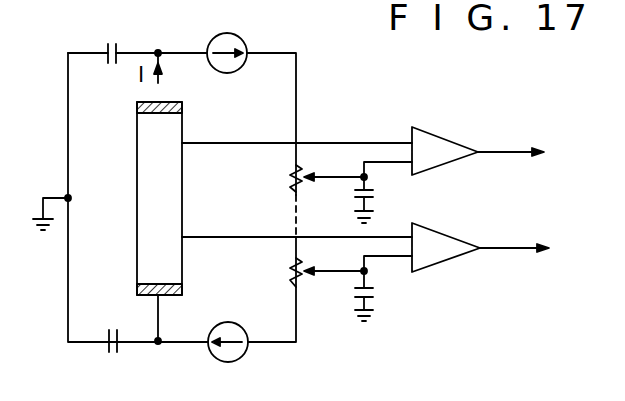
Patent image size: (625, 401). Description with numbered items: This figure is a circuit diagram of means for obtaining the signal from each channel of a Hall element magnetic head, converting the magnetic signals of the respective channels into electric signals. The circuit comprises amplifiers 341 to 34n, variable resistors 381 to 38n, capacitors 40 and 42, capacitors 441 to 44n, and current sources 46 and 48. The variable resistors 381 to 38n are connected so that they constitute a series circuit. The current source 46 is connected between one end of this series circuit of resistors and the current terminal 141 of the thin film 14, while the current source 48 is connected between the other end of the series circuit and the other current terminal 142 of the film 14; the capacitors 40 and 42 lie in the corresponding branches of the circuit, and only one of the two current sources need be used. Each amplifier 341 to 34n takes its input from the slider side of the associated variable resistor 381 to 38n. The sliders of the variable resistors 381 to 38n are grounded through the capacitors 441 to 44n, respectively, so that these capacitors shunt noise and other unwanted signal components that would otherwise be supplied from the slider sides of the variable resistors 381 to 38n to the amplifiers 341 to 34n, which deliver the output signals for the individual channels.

The thin film 14 is at (146, 201).
The current terminal 141 is at (175, 102).
The current terminal 142 is at (176, 295).
The capacitor 40 is at (108, 43).
The capacitor 42 is at (121, 348).
The current source 46 is at (242, 67).
The current source 48 is at (243, 356).
The variable resistor 381 is at (288, 178).
The variable resistor 38n is at (288, 284).
The capacitor 441 is at (376, 193).
The capacitor 44n is at (376, 294).
The amplifier 341 is at (450, 137).
The amplifier 34n is at (450, 232).